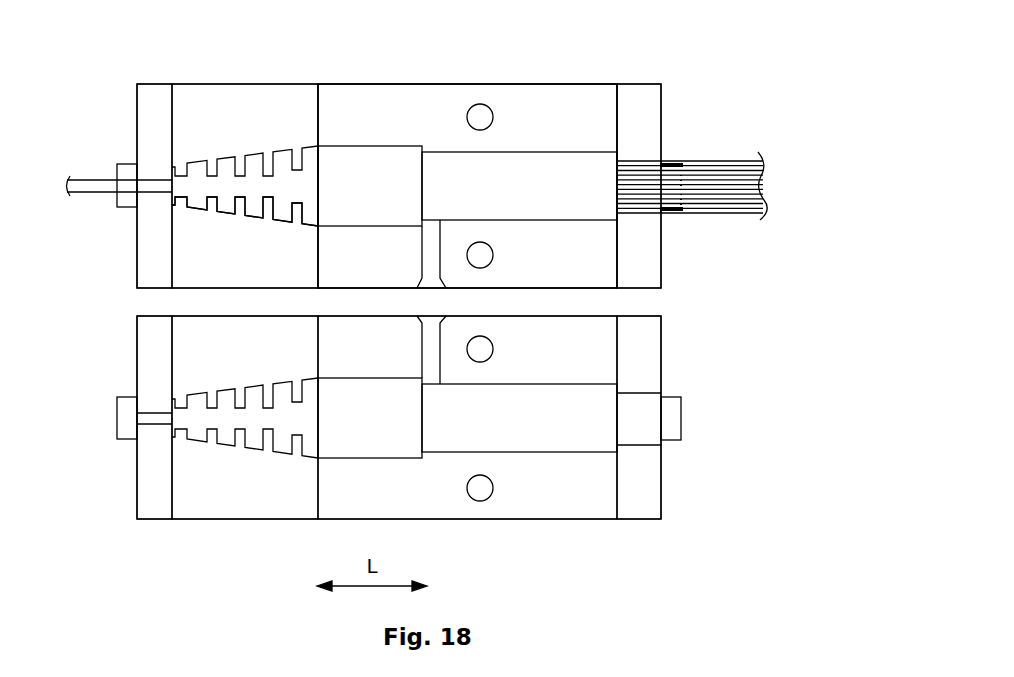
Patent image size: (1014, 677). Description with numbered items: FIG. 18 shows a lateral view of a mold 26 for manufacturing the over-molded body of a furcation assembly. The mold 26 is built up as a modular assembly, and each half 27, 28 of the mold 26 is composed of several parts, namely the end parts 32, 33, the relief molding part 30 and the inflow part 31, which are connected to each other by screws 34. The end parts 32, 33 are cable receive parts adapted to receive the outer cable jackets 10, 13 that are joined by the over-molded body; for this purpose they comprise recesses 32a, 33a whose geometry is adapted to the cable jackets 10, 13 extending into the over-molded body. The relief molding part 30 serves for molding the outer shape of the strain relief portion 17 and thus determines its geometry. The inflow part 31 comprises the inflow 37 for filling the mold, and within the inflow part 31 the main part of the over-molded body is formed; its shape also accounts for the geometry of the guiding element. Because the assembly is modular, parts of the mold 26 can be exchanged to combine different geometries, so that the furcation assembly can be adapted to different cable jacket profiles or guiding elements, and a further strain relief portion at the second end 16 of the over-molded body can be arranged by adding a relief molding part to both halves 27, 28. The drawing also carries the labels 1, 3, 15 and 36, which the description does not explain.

The coupling block 1 is at (327, 170).
The shaft end 3 is at (72, 195).
The outer cable jacket 10 is at (102, 193).
The outer cable jacket 13 is at (705, 160).
The toothed element 15 is at (172, 172).
The second end 16 is at (603, 167).
The strain relief portion 17 is at (218, 187).
The mold 26 is at (632, 44).
The half of the mold 27 is at (385, 102).
The half of the mold 28 is at (590, 510).
The relief molding part 30 is at (187, 97).
The inflow part 31 is at (430, 102).
The end part 32 is at (150, 268).
The recess 32a is at (156, 420).
The end part 33 is at (643, 263).
The recess 33a is at (645, 430).
The screws 34 is at (127, 170).
The screw holes 36 is at (482, 120).
The inflow 37 is at (432, 248).